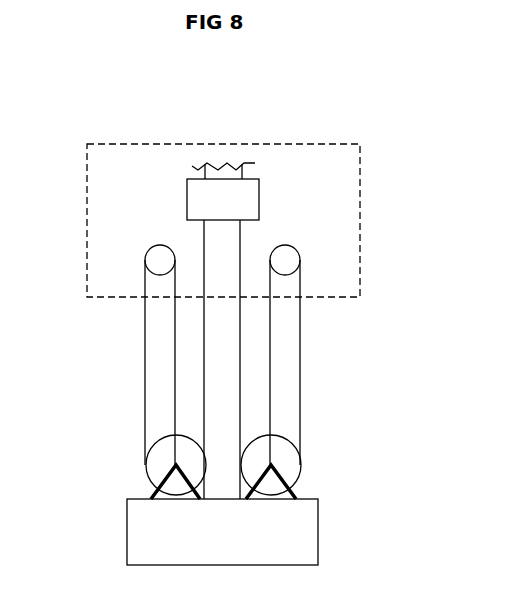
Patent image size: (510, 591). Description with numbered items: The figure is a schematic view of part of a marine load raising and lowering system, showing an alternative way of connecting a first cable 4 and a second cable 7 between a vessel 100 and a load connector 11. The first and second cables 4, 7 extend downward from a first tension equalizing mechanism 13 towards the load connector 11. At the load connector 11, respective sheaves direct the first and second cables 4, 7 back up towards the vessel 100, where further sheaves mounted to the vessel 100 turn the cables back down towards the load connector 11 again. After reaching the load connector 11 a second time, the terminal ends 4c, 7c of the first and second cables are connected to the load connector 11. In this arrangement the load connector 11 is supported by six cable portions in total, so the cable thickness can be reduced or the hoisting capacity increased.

The vessel 100 is at (360, 263).
The first tension equalizing mechanism 13 is at (252, 197).
The first cable 4 is at (204, 245).
The second cable 7 is at (240, 245).
The terminal end of the first cable 4c is at (175, 417).
The terminal end of the second cable 7c is at (272, 423).
The load connector 11 is at (298, 529).